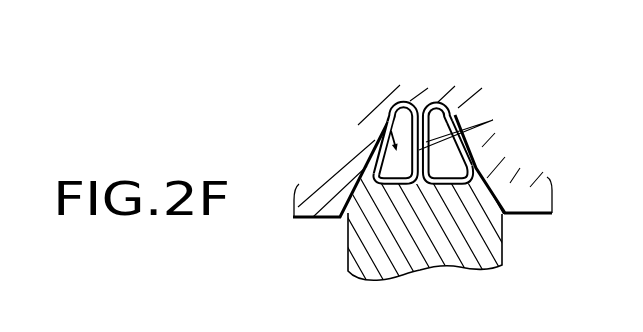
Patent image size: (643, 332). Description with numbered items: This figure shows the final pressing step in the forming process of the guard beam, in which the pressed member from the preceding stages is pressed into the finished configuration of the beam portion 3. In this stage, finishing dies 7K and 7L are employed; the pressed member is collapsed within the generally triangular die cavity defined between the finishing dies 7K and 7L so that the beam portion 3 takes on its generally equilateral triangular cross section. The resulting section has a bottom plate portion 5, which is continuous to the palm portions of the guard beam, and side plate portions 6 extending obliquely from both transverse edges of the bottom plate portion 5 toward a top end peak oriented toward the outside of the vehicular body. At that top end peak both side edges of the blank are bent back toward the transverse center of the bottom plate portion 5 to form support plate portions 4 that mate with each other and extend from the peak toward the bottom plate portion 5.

The beam portion 3 is at (405, 169).
The support plate portions 4 is at (419, 150).
The bottom plate portion 5 is at (412, 184).
The side plate portions 6 is at (373, 146).
The finishing die 7K is at (487, 250).
The finishing die 7L is at (483, 168).